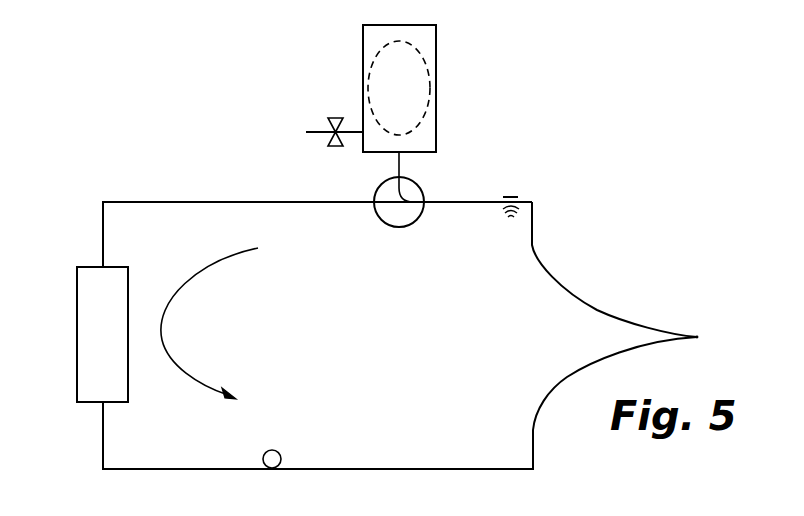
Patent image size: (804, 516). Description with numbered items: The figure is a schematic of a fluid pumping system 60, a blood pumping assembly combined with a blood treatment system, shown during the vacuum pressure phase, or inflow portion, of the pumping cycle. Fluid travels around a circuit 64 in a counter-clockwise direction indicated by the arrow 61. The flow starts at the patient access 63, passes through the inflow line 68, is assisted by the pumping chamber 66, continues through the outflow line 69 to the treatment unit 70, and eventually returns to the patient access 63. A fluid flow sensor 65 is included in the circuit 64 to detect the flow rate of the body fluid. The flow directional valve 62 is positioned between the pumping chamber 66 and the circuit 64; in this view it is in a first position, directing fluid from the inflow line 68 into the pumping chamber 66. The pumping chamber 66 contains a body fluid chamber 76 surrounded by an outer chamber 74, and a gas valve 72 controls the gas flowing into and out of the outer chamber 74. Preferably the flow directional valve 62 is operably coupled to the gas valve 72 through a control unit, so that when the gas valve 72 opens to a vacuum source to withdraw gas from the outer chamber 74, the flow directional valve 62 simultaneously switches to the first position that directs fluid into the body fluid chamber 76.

The fluid pumping system 60 is at (595, 146).
The arrow 61 is at (200, 375).
The flow directional valve 62 is at (423, 186).
The patient access 63 is at (690, 337).
The circuit 64 is at (548, 268).
The fluid flow sensor 65 is at (506, 215).
The pumping chamber 66 is at (437, 38).
The inflow line 68 is at (600, 312).
The outflow line 69 is at (222, 202).
The treatment unit 70 is at (77, 318).
The gas valve 72 is at (334, 117).
The outer chamber 74 is at (375, 140).
The body fluid chamber 76 is at (400, 75).